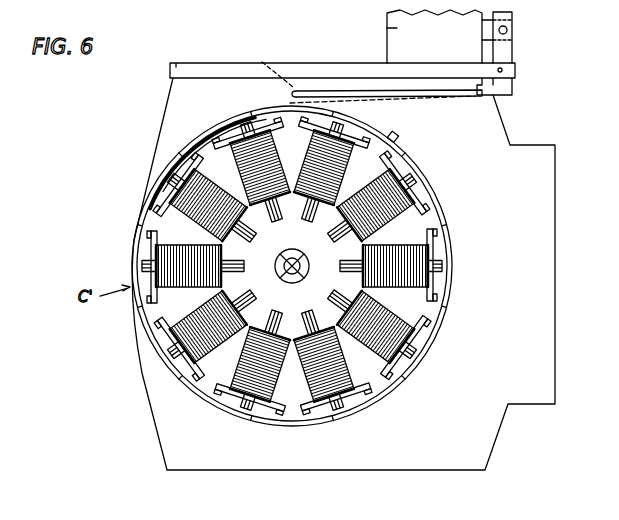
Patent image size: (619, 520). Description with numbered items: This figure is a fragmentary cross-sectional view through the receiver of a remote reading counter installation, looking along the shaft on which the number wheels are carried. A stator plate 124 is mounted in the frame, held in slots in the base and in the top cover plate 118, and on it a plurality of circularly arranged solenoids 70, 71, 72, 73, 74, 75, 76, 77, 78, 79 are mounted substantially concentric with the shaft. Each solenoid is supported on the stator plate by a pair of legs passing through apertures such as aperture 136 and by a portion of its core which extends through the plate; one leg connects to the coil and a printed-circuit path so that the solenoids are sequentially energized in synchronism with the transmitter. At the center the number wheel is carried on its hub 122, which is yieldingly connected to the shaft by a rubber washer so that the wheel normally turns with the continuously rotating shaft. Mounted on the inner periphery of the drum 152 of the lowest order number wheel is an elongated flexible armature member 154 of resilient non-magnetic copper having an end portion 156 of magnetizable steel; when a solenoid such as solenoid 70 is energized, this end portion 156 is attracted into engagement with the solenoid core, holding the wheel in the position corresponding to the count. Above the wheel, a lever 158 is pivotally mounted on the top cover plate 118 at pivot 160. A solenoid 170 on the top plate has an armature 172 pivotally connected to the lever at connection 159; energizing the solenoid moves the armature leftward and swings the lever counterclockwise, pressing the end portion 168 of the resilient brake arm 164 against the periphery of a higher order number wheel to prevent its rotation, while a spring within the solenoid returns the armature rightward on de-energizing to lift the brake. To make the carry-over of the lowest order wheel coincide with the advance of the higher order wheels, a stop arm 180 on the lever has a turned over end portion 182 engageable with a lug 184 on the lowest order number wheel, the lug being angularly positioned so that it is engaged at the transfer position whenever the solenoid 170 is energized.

The solenoid 70 is at (258, 112).
The solenoid 71 is at (188, 178).
The solenoid 72 is at (163, 249).
The solenoid 73 is at (173, 347).
The solenoid 74 is at (247, 387).
The solenoid 75 is at (327, 393).
The solenoid 76 is at (402, 335).
The solenoid 77 is at (420, 257).
The solenoid 78 is at (402, 207).
The solenoid 79 is at (340, 147).
The top cover plate 118 is at (180, 53).
The hub 122 is at (284, 282).
The stator plate 124 is at (162, 421).
The aperture 136 is at (291, 250).
The drum 152 is at (172, 155).
The elongated flexible armature member 154 is at (212, 130).
The end portion 156 is at (233, 123).
The lever 158 is at (515, 54).
The pivotal connection 159 is at (507, 30).
The pivot 160 is at (516, 71).
The brake arm 164 is at (410, 100).
The end portion 168 is at (268, 65).
The solenoid 170 is at (387, 28).
The armature 172 is at (483, 29).
The stop arm 180 is at (331, 90).
The turned over end portion 182 is at (293, 91).
The lug 184 is at (400, 137).